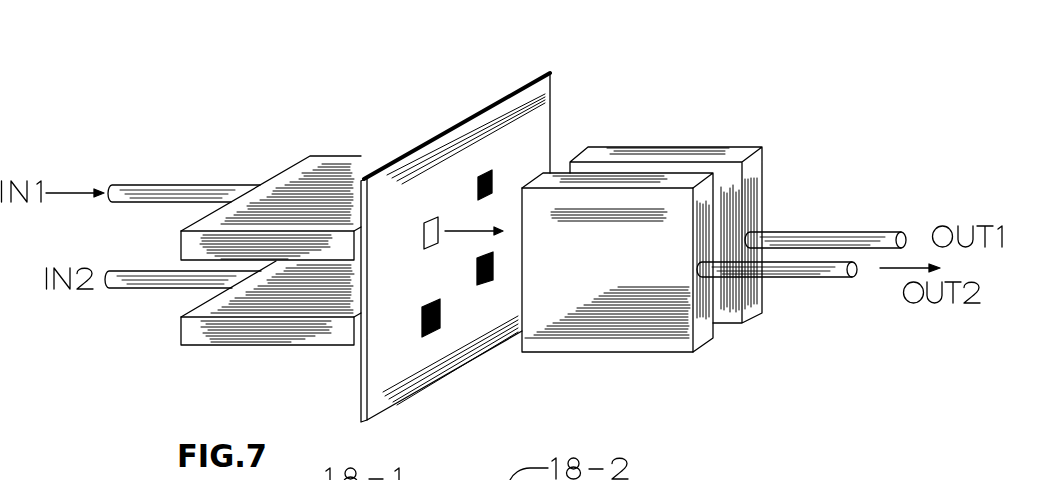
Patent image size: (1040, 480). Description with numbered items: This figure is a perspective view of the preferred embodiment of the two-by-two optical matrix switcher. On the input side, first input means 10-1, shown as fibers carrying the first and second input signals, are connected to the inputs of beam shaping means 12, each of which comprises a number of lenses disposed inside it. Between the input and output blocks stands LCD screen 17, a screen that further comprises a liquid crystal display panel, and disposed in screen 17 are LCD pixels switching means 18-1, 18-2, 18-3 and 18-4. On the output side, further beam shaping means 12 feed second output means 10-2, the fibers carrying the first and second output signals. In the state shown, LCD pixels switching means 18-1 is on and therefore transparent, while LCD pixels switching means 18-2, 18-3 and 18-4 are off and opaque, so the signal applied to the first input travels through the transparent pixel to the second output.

The first input means 10-1 is at (145, 386).
The second output means 10-2 is at (888, 168).
The beam shaping means 12 is at (823, 128).
The LCD screen 17 is at (543, 155).
The LCD pixels switching means 18-1 is at (431, 217).
The LCD pixels switching means 18-2 is at (488, 170).
The LCD pixels switching means 18-3 is at (493, 432).
The LCD pixels switching means 18-4 is at (550, 403).